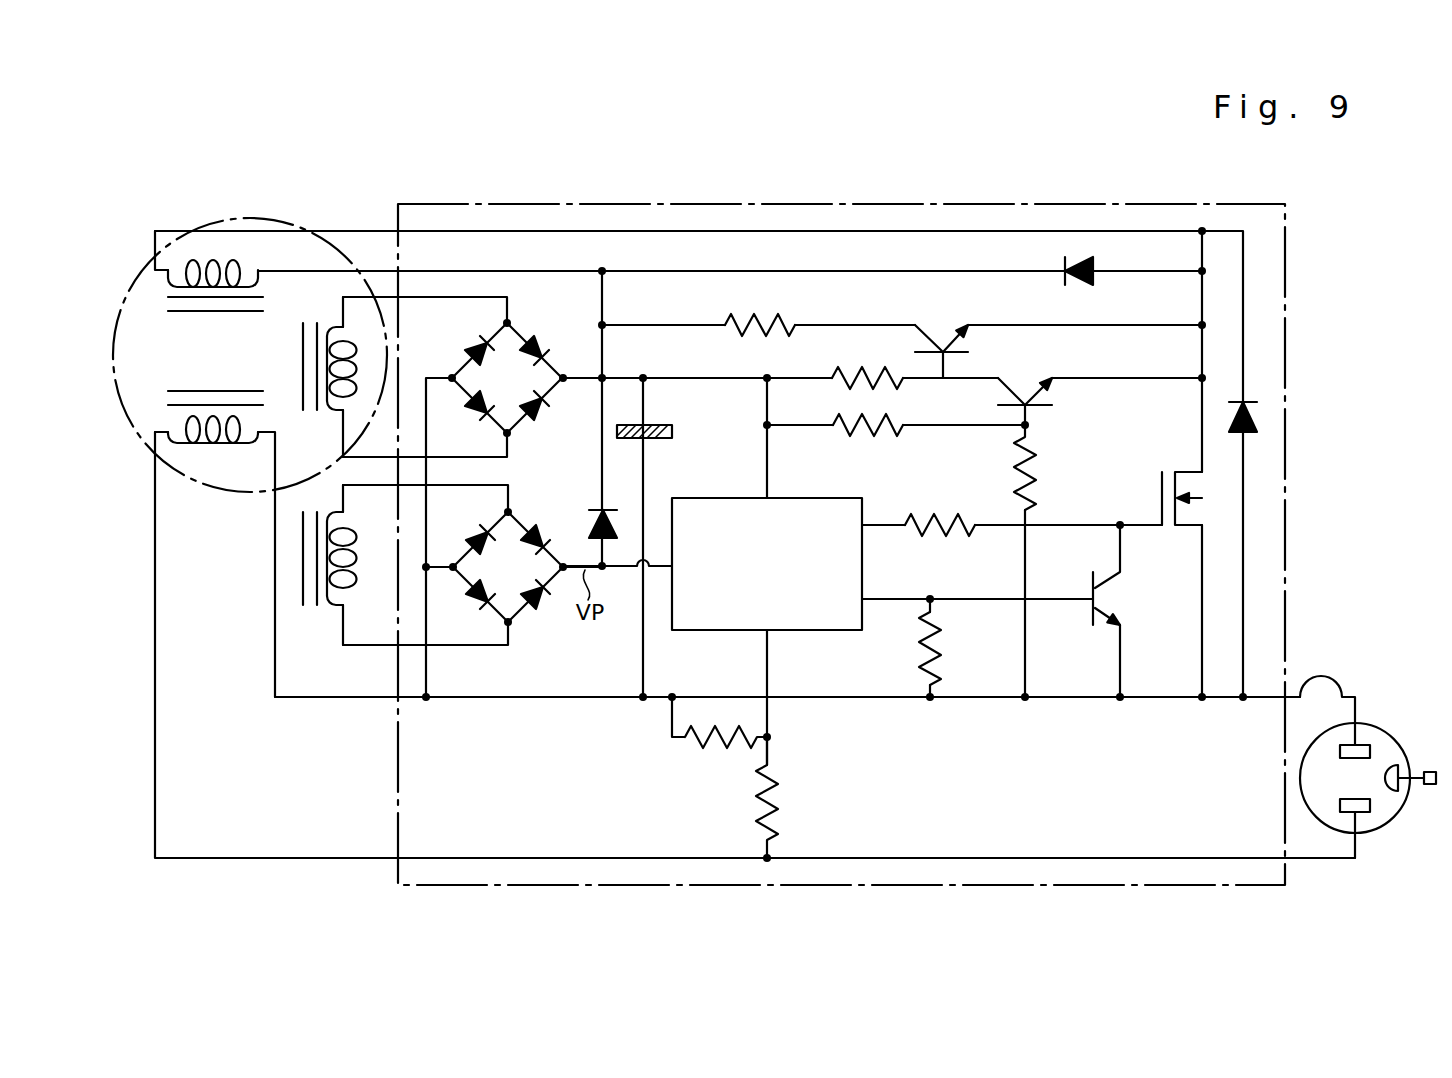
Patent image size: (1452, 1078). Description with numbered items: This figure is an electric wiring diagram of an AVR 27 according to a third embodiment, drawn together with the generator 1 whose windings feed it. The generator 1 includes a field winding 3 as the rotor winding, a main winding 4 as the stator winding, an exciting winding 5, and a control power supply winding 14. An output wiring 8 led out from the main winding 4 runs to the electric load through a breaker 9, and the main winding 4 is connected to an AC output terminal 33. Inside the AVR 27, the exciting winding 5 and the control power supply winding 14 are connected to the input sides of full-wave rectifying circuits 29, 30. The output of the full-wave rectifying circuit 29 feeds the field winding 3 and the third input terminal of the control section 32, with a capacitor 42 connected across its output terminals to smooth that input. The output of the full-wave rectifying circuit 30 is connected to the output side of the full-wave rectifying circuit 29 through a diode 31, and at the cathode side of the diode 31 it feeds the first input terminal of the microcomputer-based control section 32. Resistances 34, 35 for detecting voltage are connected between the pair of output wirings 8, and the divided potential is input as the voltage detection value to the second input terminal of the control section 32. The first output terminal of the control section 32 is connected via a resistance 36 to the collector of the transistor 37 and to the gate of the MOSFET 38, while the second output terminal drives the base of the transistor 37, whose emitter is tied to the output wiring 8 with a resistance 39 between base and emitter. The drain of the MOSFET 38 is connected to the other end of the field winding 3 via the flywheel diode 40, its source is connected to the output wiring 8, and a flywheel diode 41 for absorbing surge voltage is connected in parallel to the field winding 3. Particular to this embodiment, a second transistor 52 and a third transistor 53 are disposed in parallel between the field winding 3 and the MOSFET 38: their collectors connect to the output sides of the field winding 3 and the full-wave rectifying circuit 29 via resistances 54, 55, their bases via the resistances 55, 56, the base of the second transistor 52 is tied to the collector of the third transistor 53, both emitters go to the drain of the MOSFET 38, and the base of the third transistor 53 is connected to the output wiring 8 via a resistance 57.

The generator 1 is at (147, 440).
The field winding 3 is at (182, 260).
The main winding 4 is at (216, 452).
The exciting winding 5 is at (352, 333).
The output wiring 8 is at (1066, 703).
The breaker 9 is at (1327, 678).
The control power supply winding 14 is at (292, 585).
The AVR 27 is at (1302, 357).
The full-wave rectifying circuit 29 is at (525, 428).
The full-wave rectifying circuit 30 is at (527, 617).
The diode 31 is at (614, 505).
The control section 32 is at (802, 498).
The AC output terminal 33 is at (1390, 735).
The resistance 34 is at (717, 748).
The resistance 35 is at (780, 790).
The resistance 36 is at (935, 540).
The transistor 37 is at (1112, 597).
The MOSFET 38 is at (1167, 462).
The resistance 39 is at (952, 660).
The flywheel diode 40 is at (1082, 289).
The flywheel diode 41 is at (1258, 417).
The capacitor 42 is at (678, 432).
The second transistor 52 is at (978, 347).
The third transistor 53 is at (1058, 398).
The resistance 54 is at (767, 315).
The resistance 55 is at (873, 366).
The resistance 56 is at (883, 437).
The resistance 57 is at (1045, 480).